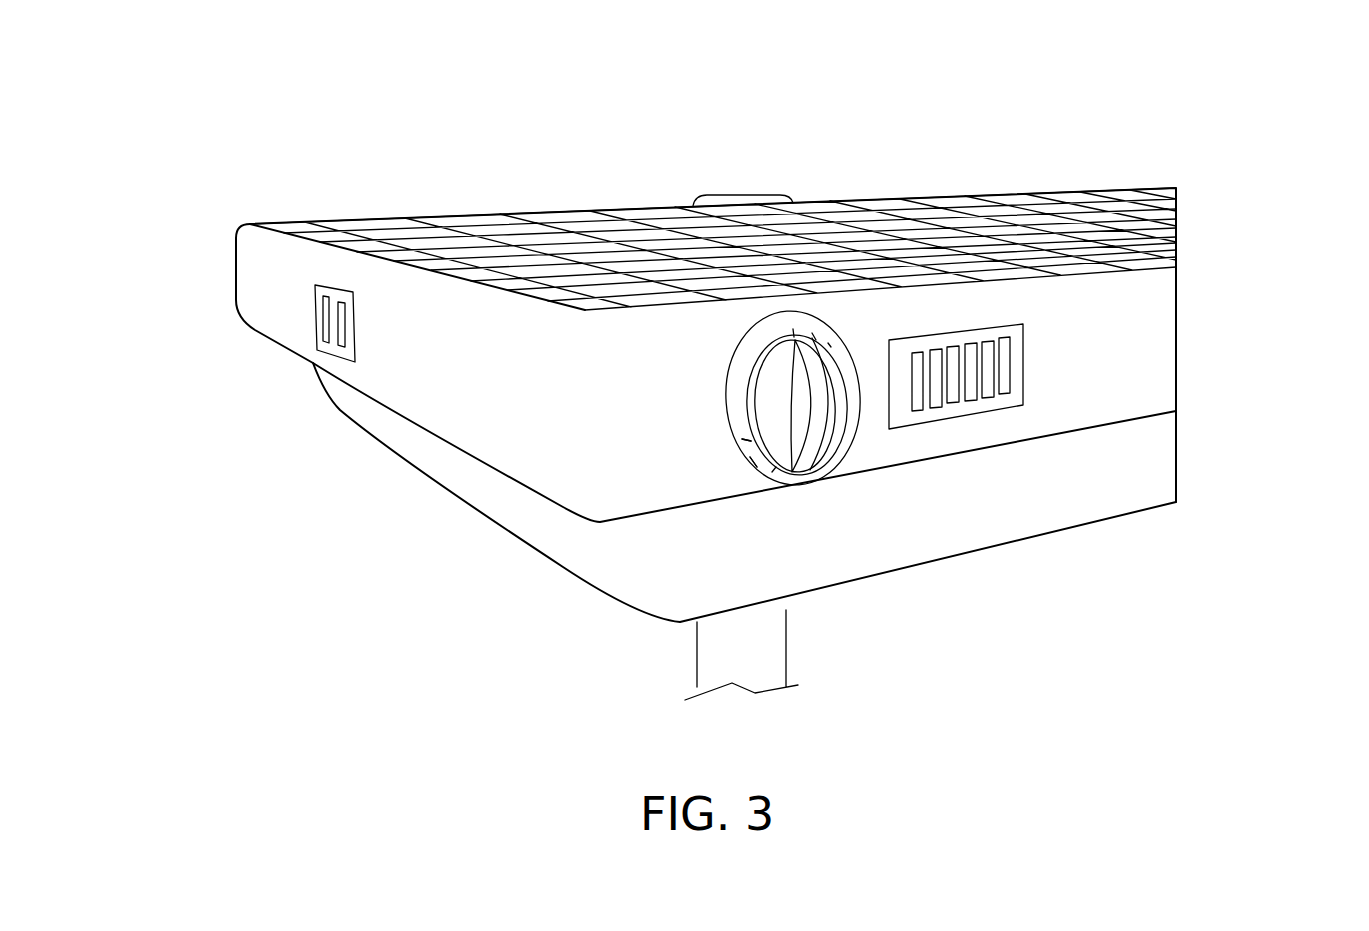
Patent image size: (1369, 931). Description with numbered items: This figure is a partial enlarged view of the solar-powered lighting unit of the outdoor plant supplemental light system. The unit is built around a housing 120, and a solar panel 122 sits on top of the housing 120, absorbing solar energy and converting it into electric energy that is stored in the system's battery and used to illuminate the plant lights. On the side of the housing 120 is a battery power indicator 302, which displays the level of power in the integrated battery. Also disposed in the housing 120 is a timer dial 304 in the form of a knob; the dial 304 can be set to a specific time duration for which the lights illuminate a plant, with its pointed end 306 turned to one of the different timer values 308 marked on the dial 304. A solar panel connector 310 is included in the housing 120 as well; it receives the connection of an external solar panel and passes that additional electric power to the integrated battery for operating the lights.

The housing 120 is at (252, 256).
The solar panel 122 is at (640, 237).
The battery power indicator 302 is at (1000, 380).
The timer dial 304 is at (822, 425).
The pointed end 306 is at (810, 358).
The timer values 308 is at (750, 458).
The solar panel connector 310 is at (350, 322).